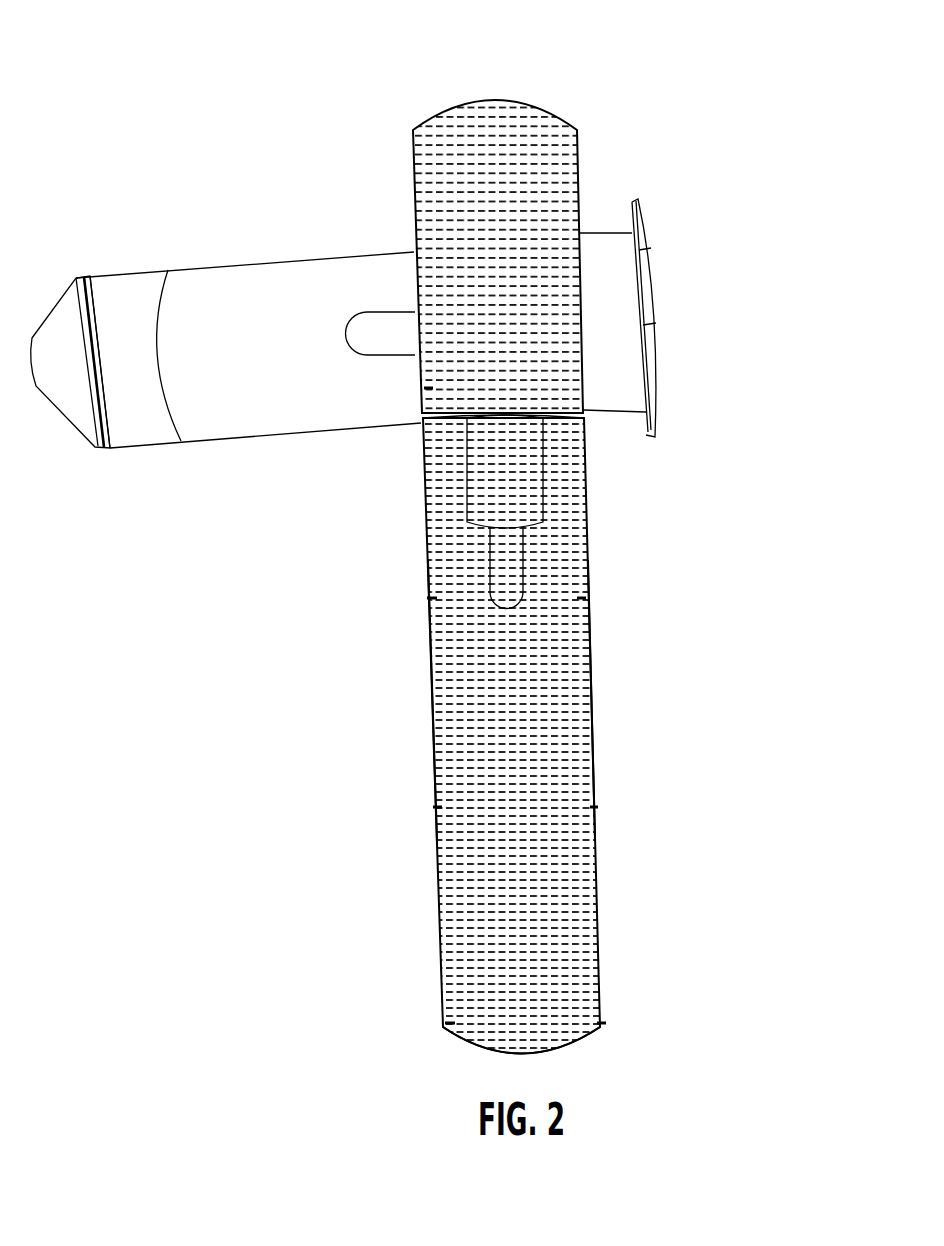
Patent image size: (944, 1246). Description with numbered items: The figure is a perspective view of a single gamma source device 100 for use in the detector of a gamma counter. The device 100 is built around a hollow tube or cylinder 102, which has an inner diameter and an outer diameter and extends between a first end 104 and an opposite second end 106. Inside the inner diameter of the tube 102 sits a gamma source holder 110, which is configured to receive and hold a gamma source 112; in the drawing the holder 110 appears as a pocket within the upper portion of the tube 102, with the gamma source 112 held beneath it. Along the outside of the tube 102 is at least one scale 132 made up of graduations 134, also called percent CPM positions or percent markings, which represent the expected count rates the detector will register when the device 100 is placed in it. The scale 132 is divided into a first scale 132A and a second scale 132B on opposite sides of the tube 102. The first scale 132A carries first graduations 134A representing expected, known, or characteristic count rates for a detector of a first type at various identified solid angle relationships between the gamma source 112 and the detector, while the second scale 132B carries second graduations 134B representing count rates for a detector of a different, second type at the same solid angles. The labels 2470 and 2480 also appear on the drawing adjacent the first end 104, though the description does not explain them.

The gamma source device 100 is at (676, 70).
The hollow tube 102 is at (575, 517).
The first end 104 is at (608, 131).
The second end 106 is at (623, 1047).
The gamma source holder 110 is at (533, 487).
The gamma source 112 is at (517, 570).
The scale 132 is at (534, 700).
The first scale 132A is at (385, 665).
The second scale 132B is at (658, 677).
The graduations 134 is at (514, 701).
The first graduations 134A is at (357, 393).
The second graduations 134B is at (656, 383).
The pen barrel 2470 is at (413, 263).
The pen flange 2480 is at (648, 260).